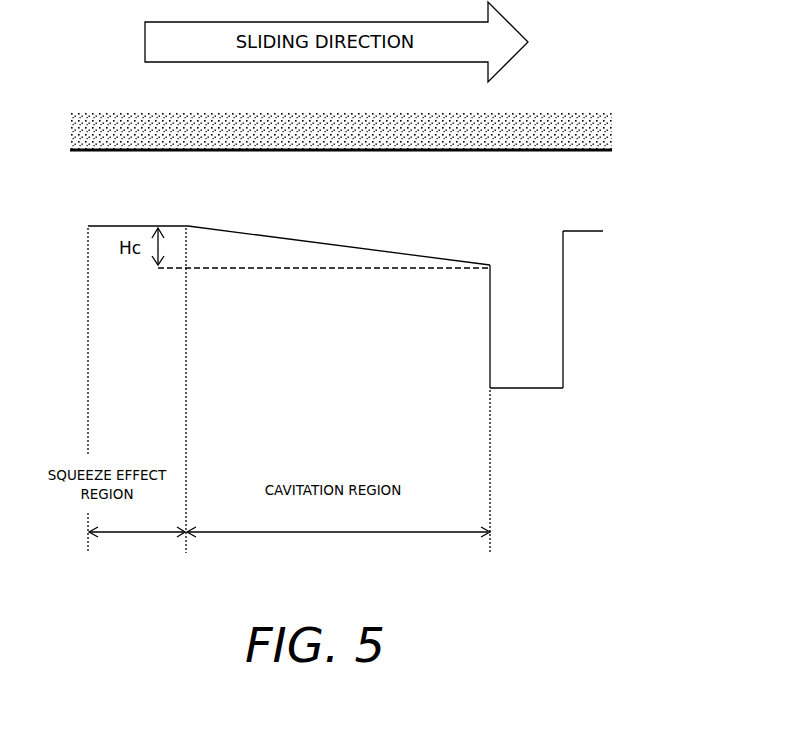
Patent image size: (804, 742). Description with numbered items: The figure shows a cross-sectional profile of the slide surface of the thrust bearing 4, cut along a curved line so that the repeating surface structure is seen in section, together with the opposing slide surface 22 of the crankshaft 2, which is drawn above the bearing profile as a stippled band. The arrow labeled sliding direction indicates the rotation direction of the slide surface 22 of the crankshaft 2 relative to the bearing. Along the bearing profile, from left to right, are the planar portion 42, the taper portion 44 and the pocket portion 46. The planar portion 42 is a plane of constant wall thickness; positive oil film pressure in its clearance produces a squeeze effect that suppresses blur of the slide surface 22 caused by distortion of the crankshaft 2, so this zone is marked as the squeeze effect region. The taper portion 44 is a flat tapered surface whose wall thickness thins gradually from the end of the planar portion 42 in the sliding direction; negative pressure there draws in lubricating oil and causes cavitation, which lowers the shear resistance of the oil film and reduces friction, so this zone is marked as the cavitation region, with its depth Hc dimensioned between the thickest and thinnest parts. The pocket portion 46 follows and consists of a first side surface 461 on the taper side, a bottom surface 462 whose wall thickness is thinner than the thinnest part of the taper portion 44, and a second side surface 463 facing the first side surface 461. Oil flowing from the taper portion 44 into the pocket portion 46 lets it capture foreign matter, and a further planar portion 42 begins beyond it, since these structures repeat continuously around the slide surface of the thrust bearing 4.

The crankshaft 2 is at (105, 97).
The slide surface of the crankshaft 22 is at (91, 151).
The thrust bearing 4 is at (400, 319).
The planar portion 42 is at (135, 227).
The taper portion 44 is at (272, 235).
The pocket portion 46 is at (533, 319).
The first side surface 461 is at (490, 334).
The bottom surface 462 is at (527, 390).
The second side surface 463 is at (565, 334).